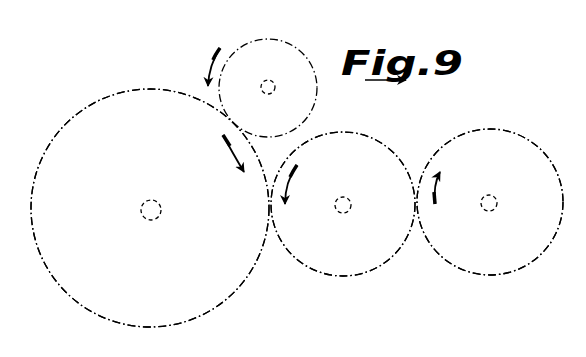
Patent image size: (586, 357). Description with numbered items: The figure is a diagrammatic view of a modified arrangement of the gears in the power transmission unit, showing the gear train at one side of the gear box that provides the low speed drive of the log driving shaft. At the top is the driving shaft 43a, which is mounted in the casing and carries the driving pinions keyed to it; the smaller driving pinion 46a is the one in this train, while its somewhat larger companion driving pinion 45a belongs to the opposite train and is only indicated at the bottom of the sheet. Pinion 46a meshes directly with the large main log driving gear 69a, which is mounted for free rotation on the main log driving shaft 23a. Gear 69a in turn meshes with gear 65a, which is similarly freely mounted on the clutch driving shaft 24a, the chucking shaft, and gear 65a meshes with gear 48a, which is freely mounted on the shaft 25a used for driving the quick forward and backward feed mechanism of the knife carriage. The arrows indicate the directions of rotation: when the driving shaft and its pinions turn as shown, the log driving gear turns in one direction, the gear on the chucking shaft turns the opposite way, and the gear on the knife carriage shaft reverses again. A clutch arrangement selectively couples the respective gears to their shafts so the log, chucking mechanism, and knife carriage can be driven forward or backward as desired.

The main log driving shaft 23a is at (151, 200).
The main log driving gear 69a is at (143, 327).
The driving pinion 46a is at (278, 34).
The driving shaft 43a is at (265, 83).
The clutch driving shaft 24a is at (342, 197).
The gear 65a is at (331, 277).
The shaft 25a is at (488, 195).
The gear 48a is at (481, 275).
The driving pinion 45a is at (285, 350).